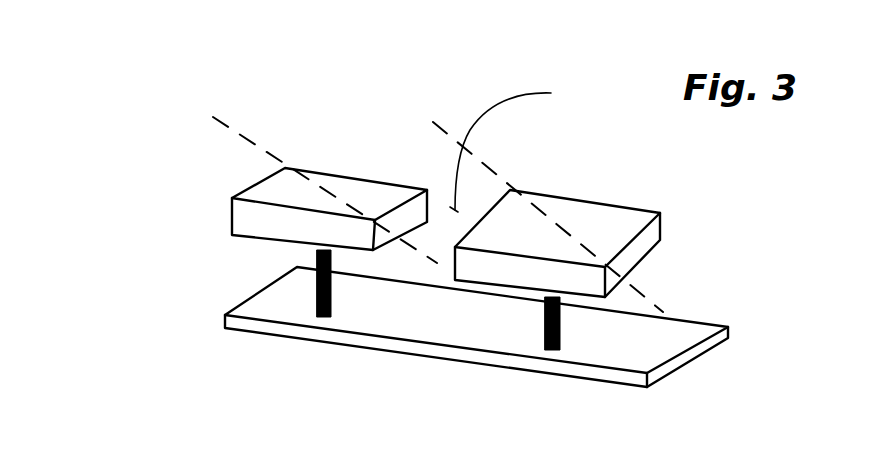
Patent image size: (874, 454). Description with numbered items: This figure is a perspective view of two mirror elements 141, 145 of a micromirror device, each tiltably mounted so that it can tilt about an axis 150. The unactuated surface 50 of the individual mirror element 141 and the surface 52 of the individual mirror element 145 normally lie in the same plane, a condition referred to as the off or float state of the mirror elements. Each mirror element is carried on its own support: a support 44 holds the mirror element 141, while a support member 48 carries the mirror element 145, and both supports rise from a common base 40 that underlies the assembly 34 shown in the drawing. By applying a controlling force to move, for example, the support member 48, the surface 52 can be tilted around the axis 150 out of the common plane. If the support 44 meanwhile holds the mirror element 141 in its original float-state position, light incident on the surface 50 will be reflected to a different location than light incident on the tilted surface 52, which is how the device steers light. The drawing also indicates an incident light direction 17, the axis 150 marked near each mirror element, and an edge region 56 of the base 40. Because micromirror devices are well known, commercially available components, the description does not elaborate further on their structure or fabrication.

The direction of movement / hidden path 17 is at (238, 169).
The brake assembly 34 is at (513, 148).
The base plate 40 is at (240, 323).
The support 44 is at (320, 257).
The support member 48 is at (545, 322).
The unactuated surface 50 is at (343, 193).
The surface 52 is at (548, 217).
The base plate edge 56 is at (598, 358).
The mirror element 141 is at (255, 223).
The mirror element 145 is at (582, 285).
The axis 150 is at (582, 116).